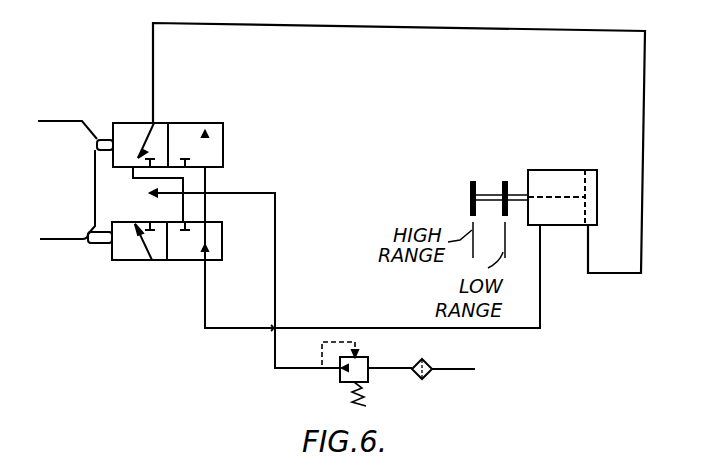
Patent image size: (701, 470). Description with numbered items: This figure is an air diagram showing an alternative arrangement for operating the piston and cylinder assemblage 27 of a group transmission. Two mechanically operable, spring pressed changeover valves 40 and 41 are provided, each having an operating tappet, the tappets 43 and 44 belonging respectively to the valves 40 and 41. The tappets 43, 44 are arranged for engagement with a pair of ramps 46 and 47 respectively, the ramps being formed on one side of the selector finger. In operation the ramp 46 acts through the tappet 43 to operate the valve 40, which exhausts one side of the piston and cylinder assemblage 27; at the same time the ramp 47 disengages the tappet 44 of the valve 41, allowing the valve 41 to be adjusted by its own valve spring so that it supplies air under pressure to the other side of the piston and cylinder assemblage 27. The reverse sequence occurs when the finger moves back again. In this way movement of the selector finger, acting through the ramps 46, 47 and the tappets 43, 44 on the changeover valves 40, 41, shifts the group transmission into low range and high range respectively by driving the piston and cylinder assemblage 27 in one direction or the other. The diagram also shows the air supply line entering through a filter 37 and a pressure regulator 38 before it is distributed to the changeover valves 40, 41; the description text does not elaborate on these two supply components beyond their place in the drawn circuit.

The piston and cylinder assemblage 27 is at (597, 207).
The filter 37 is at (431, 379).
The pressure regulator 38 is at (335, 373).
The changeover valve 40 is at (131, 123).
The changeover valve 41 is at (158, 263).
The operating tappet 43 is at (106, 140).
The operating tappet 44 is at (98, 245).
The ramp 46 is at (87, 131).
The ramp 47 is at (88, 232).